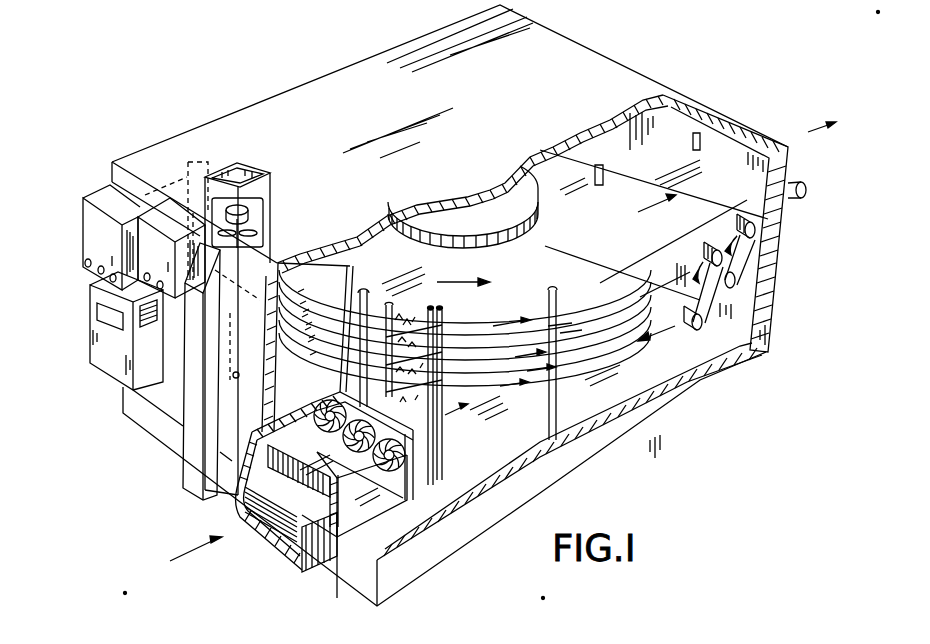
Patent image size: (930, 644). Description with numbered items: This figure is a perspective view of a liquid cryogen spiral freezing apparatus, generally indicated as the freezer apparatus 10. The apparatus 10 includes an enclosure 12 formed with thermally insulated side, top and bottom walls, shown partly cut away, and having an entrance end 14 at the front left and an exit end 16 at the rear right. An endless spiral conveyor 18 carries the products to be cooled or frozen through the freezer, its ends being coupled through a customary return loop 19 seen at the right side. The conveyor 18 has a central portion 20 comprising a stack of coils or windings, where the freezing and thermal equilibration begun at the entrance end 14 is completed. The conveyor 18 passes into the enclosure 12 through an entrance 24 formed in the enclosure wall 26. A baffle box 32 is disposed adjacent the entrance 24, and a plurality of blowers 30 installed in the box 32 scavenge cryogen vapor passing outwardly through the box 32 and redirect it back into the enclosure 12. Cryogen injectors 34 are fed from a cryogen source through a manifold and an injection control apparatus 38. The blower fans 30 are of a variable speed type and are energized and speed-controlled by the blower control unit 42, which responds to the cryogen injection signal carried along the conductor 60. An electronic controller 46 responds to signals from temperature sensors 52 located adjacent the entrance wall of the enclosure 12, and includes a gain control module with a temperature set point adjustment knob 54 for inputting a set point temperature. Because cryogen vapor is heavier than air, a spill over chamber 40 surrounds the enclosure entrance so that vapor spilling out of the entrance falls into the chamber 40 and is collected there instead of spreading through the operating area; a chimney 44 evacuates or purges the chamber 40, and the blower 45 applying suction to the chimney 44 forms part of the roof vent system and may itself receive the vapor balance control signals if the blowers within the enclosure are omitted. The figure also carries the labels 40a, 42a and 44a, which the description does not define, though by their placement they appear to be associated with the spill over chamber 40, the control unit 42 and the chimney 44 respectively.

The freezer apparatus 10 is at (622, 47).
The enclosure 12 is at (287, 103).
The entrance end 14 is at (163, 420).
The exit end 16 is at (678, 130).
The endless spiral conveyor 18 is at (676, 335).
The return loop 19 is at (743, 257).
The central portion 20 is at (504, 306).
The entrance 24 is at (348, 510).
The enclosure wall 26 is at (340, 527).
The blowers 30 is at (395, 445).
The baffle box 32 is at (298, 410).
The cryogen injectors 34 is at (236, 370).
The injection control apparatus 38 is at (122, 356).
The spill over chamber 40 is at (350, 265).
The vertical frame panel 40a is at (317, 552).
The blower control unit 42 is at (166, 261).
The air inlet 42a is at (253, 480).
The chimney 44 is at (133, 210).
The vertical duct 44a is at (262, 187).
The blower 45 is at (255, 215).
The electronic controller 46 is at (114, 247).
The temperature sensors 52 is at (210, 163).
The temperature set point adjustment knob 54 is at (192, 279).
The conductor 60 is at (137, 303).